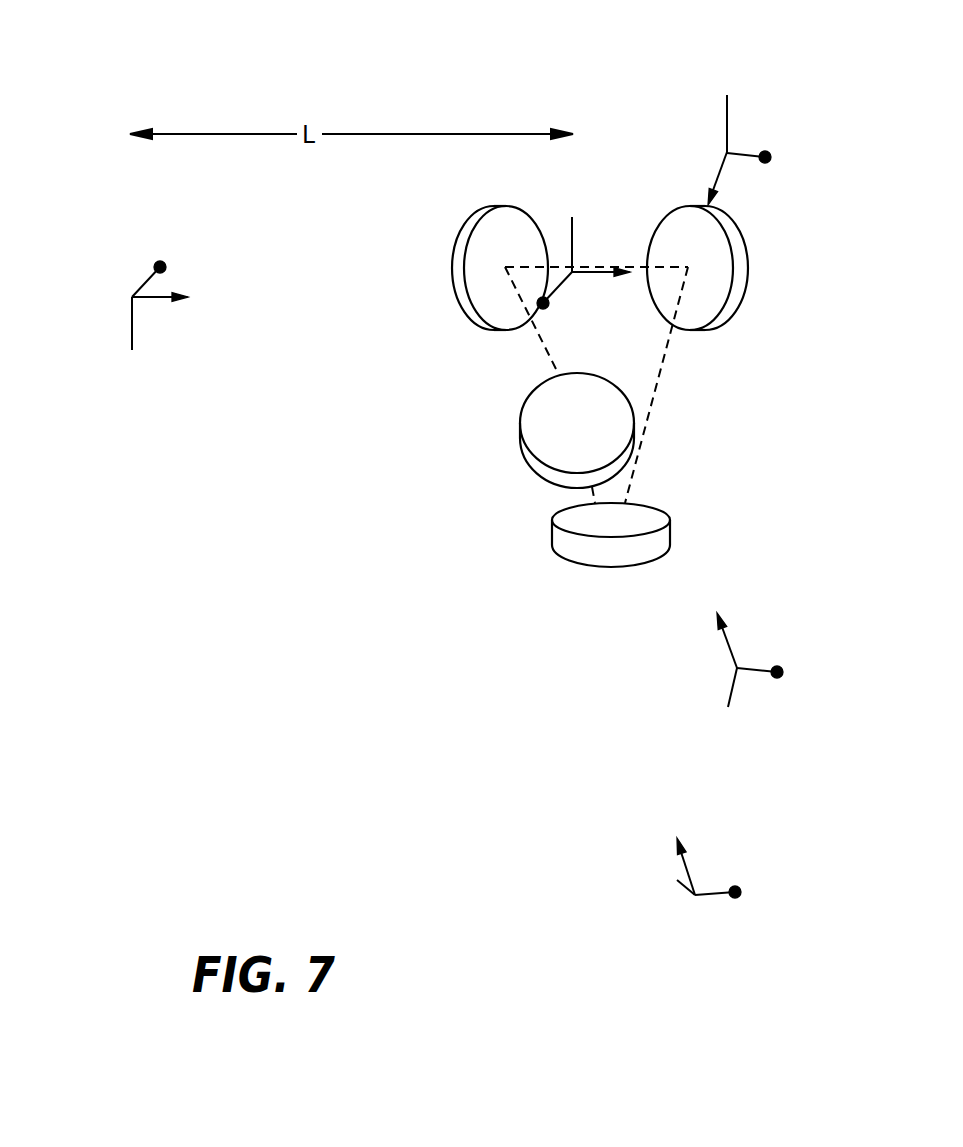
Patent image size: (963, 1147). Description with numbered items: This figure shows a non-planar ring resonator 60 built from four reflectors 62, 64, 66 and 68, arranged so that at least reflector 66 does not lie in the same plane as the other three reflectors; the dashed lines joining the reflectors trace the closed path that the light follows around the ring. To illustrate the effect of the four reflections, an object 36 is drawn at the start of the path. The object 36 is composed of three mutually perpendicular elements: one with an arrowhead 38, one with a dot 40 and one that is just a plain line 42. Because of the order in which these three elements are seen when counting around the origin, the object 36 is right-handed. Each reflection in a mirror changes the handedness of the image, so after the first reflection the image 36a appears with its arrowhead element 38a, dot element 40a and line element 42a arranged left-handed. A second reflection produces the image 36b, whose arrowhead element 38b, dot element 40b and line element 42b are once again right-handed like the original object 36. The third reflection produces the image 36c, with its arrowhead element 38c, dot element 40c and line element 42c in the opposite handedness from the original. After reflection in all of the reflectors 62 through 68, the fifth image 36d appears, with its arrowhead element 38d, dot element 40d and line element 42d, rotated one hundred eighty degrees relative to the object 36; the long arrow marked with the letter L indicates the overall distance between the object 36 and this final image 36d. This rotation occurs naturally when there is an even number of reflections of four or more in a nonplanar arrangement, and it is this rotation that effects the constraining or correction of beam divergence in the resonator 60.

The non-planar ring resonator 60 is at (700, 39).
The reflector 62 is at (706, 284).
The reflector 64 is at (591, 538).
The reflector 66 is at (552, 441).
The reflector 68 is at (478, 291).
The object 36 is at (574, 238).
The arrowhead element 38 is at (589, 270).
The dot element 40 is at (558, 289).
The line element 42 is at (572, 236).
The image 36a is at (746, 120).
The arrowhead element 38a is at (713, 181).
The dot element 40a is at (743, 150).
The line element 42a is at (728, 120).
The image 36b is at (683, 871).
The arrowhead element 38b is at (688, 862).
The dot element 40b is at (738, 886).
The line element 42b is at (687, 882).
The image 36c is at (742, 638).
The arrowhead element 38c is at (732, 647).
The dot element 40c is at (762, 670).
The line element 42c is at (730, 693).
The fifth image 36d is at (160, 294).
The arrowhead element 38d is at (157, 298).
The dot element 40d is at (145, 283).
The line element 42d is at (128, 327).